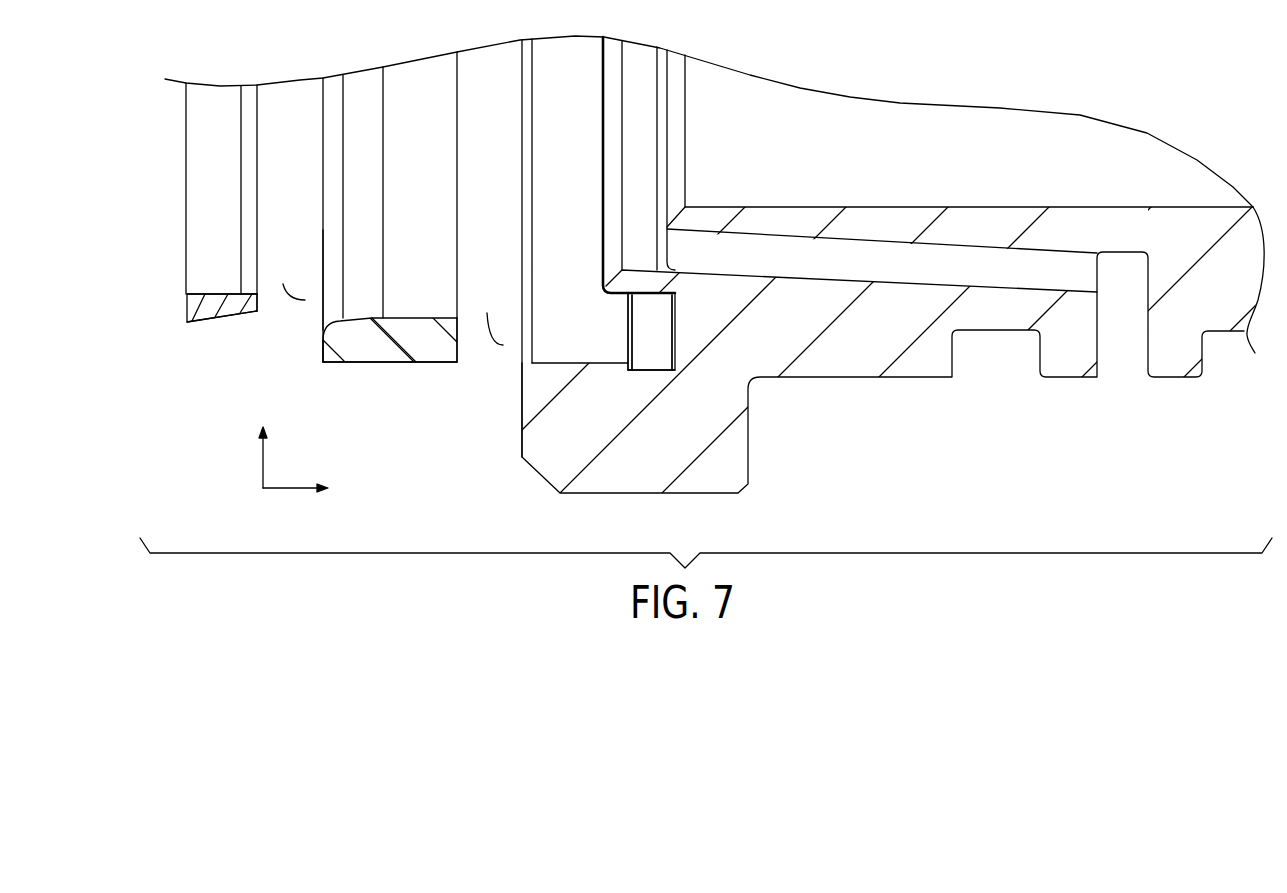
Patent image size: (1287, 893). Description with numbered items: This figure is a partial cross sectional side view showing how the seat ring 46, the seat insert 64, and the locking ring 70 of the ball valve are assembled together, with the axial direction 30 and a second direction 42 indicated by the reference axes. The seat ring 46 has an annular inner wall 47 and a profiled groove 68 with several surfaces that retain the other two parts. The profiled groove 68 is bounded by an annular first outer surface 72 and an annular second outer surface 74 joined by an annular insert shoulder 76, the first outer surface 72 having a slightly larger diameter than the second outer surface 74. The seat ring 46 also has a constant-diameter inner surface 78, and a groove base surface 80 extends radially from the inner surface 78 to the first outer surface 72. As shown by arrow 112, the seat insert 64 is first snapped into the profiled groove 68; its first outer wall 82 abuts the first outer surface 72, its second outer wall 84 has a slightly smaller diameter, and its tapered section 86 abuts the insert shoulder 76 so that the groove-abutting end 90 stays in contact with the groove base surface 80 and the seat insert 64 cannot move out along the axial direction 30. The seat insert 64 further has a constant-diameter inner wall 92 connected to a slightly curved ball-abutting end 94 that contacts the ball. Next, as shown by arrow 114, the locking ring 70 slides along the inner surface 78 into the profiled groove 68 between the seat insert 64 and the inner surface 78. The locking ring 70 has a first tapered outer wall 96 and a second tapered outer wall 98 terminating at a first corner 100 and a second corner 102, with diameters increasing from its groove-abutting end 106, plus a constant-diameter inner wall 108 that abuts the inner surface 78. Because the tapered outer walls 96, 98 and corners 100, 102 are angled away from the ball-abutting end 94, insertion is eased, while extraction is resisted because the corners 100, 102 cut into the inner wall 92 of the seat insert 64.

The axial direction 30 is at (290, 488).
The radial direction 42 is at (263, 462).
The seat ring 46 is at (975, 55).
The annular inner wall 47 is at (990, 207).
The seat insert 64 is at (307, 165).
The profiled groove 68 is at (645, 352).
The locking ring 70 is at (152, 160).
The first outer surface 72 is at (650, 372).
The second outer surface 74 is at (555, 368).
The insert shoulder 76 is at (628, 365).
The inner surface 78 is at (645, 297).
The groove base surface 80 is at (675, 330).
The first outer wall 82 is at (433, 366).
The second outer wall 84 is at (323, 365).
The tapered section 86 is at (412, 365).
The groove-abutting end 90 is at (458, 365).
The inner wall 92 is at (418, 318).
The ball-abutting end 94 is at (328, 322).
The first tapered outer wall 96 is at (245, 325).
The second tapered outer wall 98 is at (200, 323).
The first corner 100 is at (222, 323).
The second corner 102 is at (187, 320).
The groove-abutting end 106 is at (260, 307).
The inner wall 108 is at (213, 294).
The arrow 112 is at (503, 345).
The arrow 114 is at (305, 300).